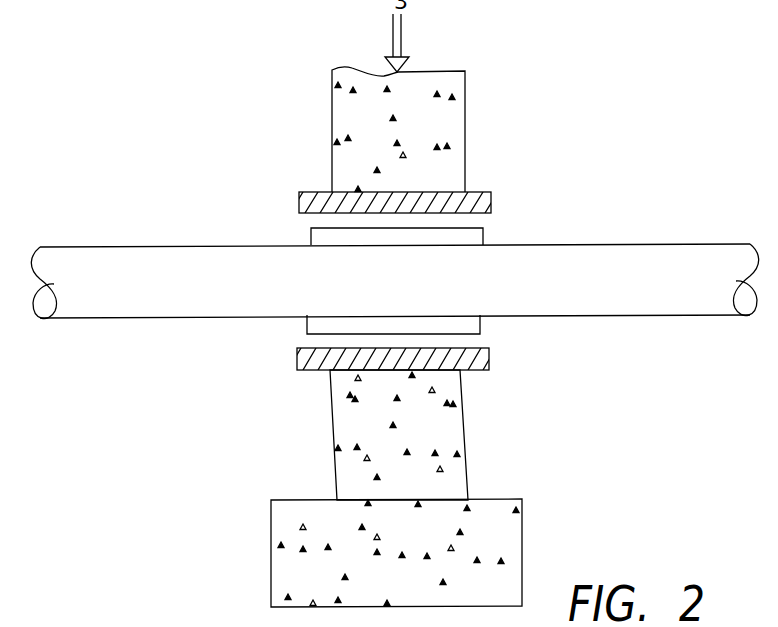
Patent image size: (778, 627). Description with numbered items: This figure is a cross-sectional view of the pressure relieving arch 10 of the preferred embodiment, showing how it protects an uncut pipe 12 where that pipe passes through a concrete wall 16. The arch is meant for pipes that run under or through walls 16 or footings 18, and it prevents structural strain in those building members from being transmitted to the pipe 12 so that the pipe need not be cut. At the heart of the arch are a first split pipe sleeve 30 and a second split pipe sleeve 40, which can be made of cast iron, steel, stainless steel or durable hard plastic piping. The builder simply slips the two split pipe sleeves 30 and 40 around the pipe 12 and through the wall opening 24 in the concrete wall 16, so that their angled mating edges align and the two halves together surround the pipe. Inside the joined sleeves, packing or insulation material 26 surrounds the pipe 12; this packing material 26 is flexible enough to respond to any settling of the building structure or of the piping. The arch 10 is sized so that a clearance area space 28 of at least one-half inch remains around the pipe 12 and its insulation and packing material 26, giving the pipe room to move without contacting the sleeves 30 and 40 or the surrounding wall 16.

The pressure relieving arch 10 is at (201, 226).
The uncut pipe 12 is at (575, 280).
The wall 16 is at (468, 132).
The footing 18 is at (289, 544).
The wall opening 24 is at (331, 189).
The packing material 26 is at (310, 238).
The clearance area space 28 is at (482, 220).
The first split pipe sleeve 30 is at (483, 189).
The second split pipe sleeve 40 is at (491, 365).